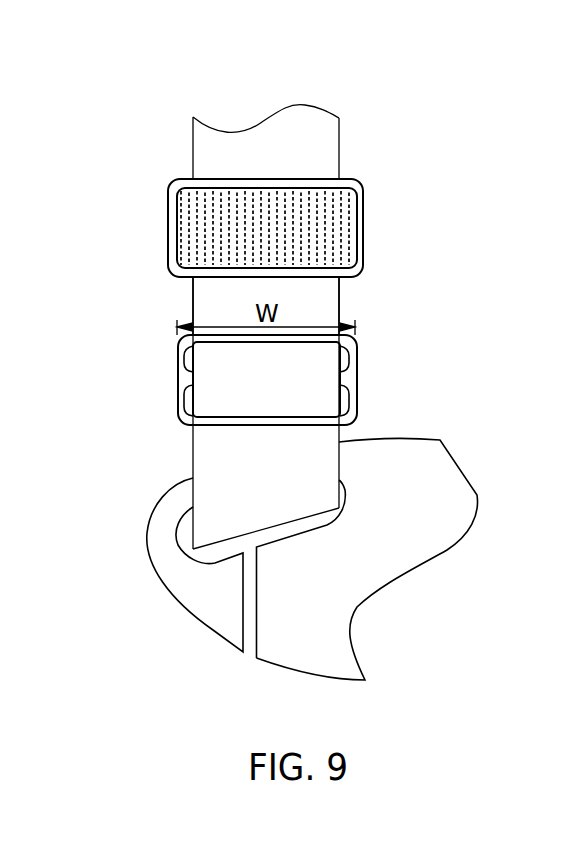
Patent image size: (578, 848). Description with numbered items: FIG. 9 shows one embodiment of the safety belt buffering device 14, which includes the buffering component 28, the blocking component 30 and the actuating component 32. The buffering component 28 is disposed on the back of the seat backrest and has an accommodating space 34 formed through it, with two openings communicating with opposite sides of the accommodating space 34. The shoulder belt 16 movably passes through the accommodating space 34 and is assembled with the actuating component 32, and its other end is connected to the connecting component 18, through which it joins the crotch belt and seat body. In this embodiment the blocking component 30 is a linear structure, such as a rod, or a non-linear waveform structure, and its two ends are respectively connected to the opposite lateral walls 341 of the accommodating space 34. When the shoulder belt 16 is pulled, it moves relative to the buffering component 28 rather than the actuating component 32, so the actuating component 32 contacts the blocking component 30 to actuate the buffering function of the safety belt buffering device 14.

The safety belt buffering device 14 is at (457, 111).
The shoulder belt 16 is at (237, 450).
The connecting component 18 is at (213, 603).
The buffering component 28 is at (206, 278).
The blocking component 30 is at (356, 223).
The actuating component 32 is at (183, 378).
The accommodating space 34 is at (277, 253).
The lateral wall 341 is at (177, 206).